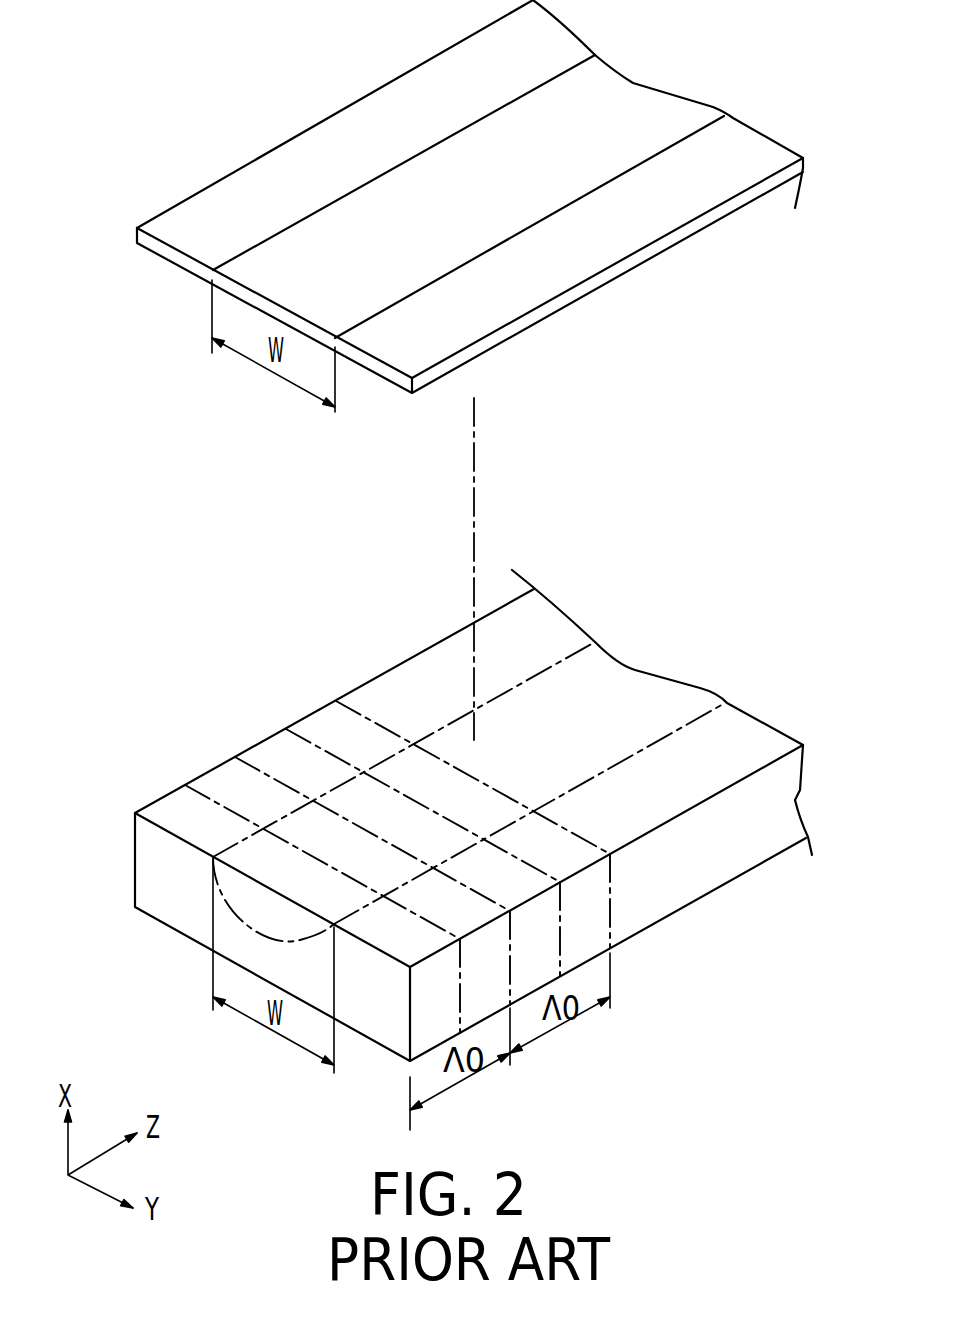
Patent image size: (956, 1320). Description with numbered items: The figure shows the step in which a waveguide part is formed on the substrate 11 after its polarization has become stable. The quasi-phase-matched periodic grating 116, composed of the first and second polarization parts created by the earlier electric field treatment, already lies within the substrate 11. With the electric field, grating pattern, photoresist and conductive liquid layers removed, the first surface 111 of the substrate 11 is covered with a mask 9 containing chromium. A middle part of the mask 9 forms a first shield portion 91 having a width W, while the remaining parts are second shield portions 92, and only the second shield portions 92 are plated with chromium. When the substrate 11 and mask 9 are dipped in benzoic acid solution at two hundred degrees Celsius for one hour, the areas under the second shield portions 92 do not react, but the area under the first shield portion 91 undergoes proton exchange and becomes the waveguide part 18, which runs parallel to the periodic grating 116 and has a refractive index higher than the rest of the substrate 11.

The mask 9 is at (465, 196).
The first shield portion 91 is at (603, 128).
The second shield portions 92 is at (218, 198).
The substrate 11 is at (454, 850).
The first surface 111 is at (172, 825).
The quasi-phase-matched periodic grating 116 is at (267, 720).
The waveguide part 18 is at (625, 702).